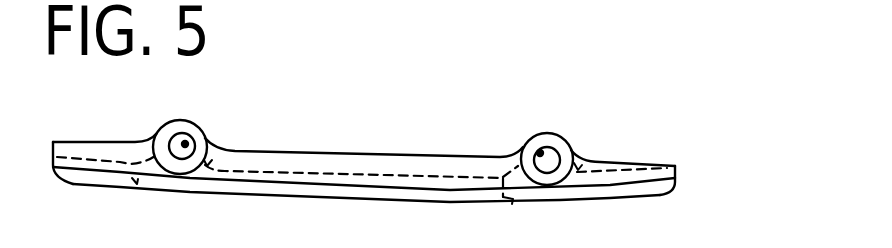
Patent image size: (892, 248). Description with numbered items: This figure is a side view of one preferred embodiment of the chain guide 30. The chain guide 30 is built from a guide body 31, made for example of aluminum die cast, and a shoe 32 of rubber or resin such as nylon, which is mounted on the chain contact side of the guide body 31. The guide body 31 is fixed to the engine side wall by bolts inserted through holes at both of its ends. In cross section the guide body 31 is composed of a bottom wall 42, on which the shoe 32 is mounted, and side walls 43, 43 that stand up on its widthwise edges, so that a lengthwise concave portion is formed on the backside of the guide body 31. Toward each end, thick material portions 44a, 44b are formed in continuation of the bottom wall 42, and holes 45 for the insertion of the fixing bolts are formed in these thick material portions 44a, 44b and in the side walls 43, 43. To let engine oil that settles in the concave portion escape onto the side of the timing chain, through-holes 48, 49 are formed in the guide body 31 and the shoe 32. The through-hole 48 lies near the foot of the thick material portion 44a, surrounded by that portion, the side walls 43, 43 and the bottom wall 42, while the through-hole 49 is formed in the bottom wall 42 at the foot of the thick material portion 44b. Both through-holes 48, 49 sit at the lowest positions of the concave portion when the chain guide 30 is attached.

The chain guide 30 is at (376, 143).
The guide body 31 is at (357, 151).
The shoe 32 is at (657, 194).
The bottom wall 42 is at (440, 177).
The side wall 43 is at (314, 162).
The thick material portion 44a is at (214, 158).
The thick material portion 44b is at (584, 163).
The hole 45 is at (187, 143).
The through-hole 48 is at (143, 163).
The through-hole 49 is at (513, 201).